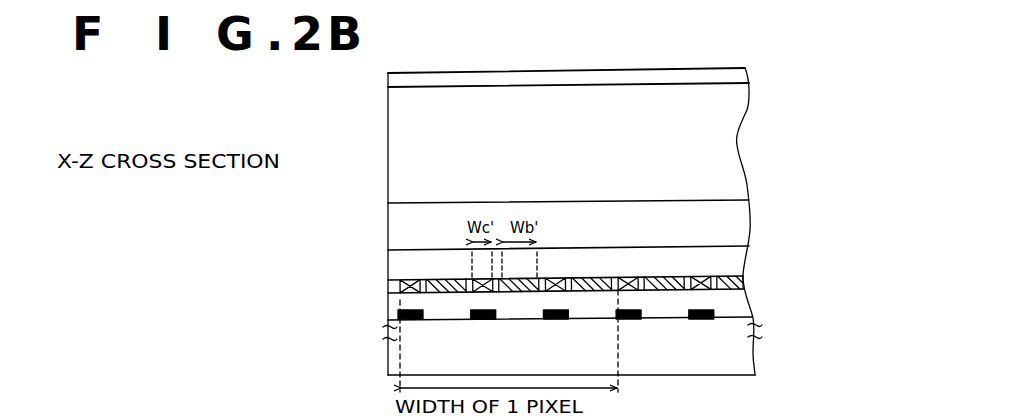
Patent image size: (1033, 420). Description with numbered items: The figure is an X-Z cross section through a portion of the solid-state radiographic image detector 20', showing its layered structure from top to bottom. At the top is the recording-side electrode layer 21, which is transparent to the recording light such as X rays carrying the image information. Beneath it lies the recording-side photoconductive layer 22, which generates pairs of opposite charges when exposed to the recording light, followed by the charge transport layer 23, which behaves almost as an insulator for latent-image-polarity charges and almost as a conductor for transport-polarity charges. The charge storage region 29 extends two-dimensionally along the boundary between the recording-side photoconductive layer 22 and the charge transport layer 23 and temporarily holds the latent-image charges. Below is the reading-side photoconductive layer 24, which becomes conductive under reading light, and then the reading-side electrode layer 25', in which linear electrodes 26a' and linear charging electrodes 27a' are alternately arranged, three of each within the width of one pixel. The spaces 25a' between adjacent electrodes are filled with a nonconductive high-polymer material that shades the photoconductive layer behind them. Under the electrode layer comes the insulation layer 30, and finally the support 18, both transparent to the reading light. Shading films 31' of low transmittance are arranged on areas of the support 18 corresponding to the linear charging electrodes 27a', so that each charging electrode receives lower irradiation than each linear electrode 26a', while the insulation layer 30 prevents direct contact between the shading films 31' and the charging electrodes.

The support 18 is at (392, 361).
The solid-state radiographic image detector 20' is at (338, 145).
The recording-side electrode layer 21 is at (388, 82).
The recording-side photoconductive layer 22 is at (393, 153).
The charge transport layer 23 is at (396, 229).
The reading-side photoconductive layer 24 is at (394, 268).
The reading-side electrode layer 25' is at (539, 256).
The space 25a' is at (584, 256).
The linear electrode 26a' is at (612, 258).
The linear charging electrode 27a' is at (556, 256).
The charge storage region 29 is at (407, 202).
The insulation layer 30 is at (392, 301).
The shading film 31' is at (556, 337).